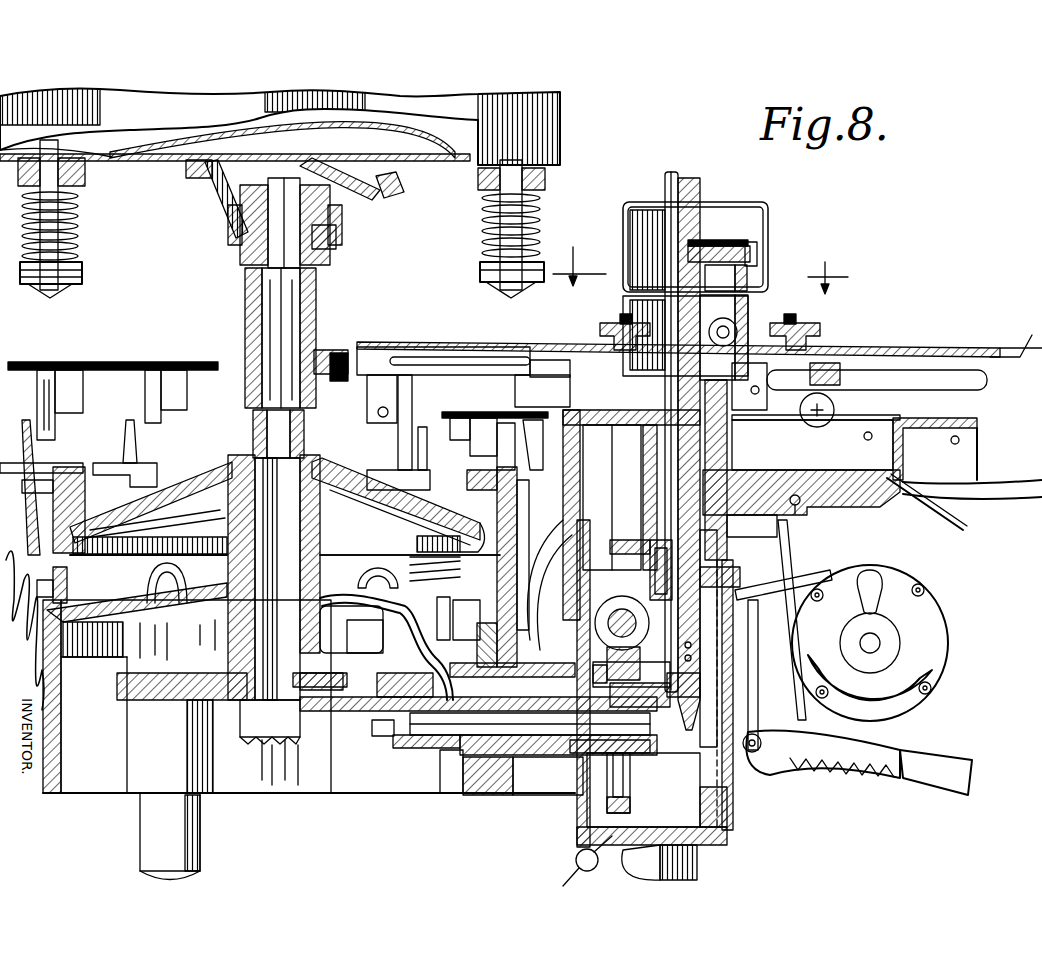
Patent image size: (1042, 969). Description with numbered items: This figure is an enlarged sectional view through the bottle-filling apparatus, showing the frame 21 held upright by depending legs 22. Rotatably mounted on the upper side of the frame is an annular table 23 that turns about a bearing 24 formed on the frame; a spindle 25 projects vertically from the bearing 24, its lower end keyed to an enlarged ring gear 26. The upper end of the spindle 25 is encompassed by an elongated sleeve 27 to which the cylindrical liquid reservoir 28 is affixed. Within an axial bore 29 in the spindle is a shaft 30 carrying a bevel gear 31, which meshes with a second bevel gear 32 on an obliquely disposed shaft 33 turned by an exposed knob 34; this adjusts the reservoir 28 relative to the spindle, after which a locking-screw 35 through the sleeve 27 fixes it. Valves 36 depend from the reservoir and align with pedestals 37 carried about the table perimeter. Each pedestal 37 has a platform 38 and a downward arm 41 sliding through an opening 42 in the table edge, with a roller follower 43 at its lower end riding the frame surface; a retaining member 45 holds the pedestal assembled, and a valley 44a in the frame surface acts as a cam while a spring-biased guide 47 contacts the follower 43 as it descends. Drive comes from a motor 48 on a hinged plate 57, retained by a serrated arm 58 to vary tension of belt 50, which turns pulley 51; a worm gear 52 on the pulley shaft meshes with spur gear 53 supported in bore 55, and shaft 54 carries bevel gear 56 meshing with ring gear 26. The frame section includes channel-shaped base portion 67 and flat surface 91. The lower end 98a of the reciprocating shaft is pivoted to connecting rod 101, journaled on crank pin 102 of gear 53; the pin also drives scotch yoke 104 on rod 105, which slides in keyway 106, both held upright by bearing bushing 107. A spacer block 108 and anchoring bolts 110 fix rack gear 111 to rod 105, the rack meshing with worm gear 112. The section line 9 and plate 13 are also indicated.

The section line 9- 9 is at (700, 259).
The plate 13 is at (722, 632).
The frame 21 is at (278, 790).
The legs 22 is at (200, 848).
The table 23 is at (158, 500).
The bearing 24 is at (232, 526).
The spindle 25 is at (306, 432).
The gear 26 is at (340, 700).
The sleeve 27 is at (318, 308).
The liquid reservoir 28 is at (560, 127).
The axial bore 29 is at (267, 430).
The shaft 30 is at (300, 270).
The bevel gear 31 is at (236, 196).
The second bevel gear 32 is at (336, 238).
The shaft 33 is at (372, 200).
The knob 34 is at (402, 186).
The locking-screw 35 is at (348, 352).
The valves 36 is at (85, 268).
The pedestal 37 is at (52, 366).
The platform 38 is at (80, 362).
The arm 41 is at (54, 432).
The opening 42 is at (66, 578).
The follower 43 is at (63, 606).
The valley 44a is at (455, 750).
The retaining member 45 is at (528, 476).
The spring-biased guide 47 is at (460, 620).
The motor 48 is at (940, 625).
The belt 50 is at (806, 572).
The pulley 51 is at (545, 540).
The worm gear 52 is at (596, 626).
The spur gear 53 is at (637, 790).
The shaft 54 is at (545, 745).
The bore 55 is at (510, 757).
The bevel gear 56 is at (400, 750).
The plate 57 is at (800, 745).
The arm 58 is at (915, 765).
The base portion 67 is at (936, 507).
The flat surface 91 is at (890, 412).
The lower end of shaft 98a is at (650, 530).
The connecting rod 101 is at (665, 620).
The crank pin 102 is at (672, 672).
The scotch yoke 104 is at (689, 732).
The rod 105 is at (747, 280).
The keyway 106 is at (700, 236).
The bearing bushing 107 is at (810, 306).
The spacer block 108 is at (748, 244).
The anchoring bolts 110 is at (757, 256).
The rack gear 111 is at (737, 320).
The worm gear 112 is at (660, 330).